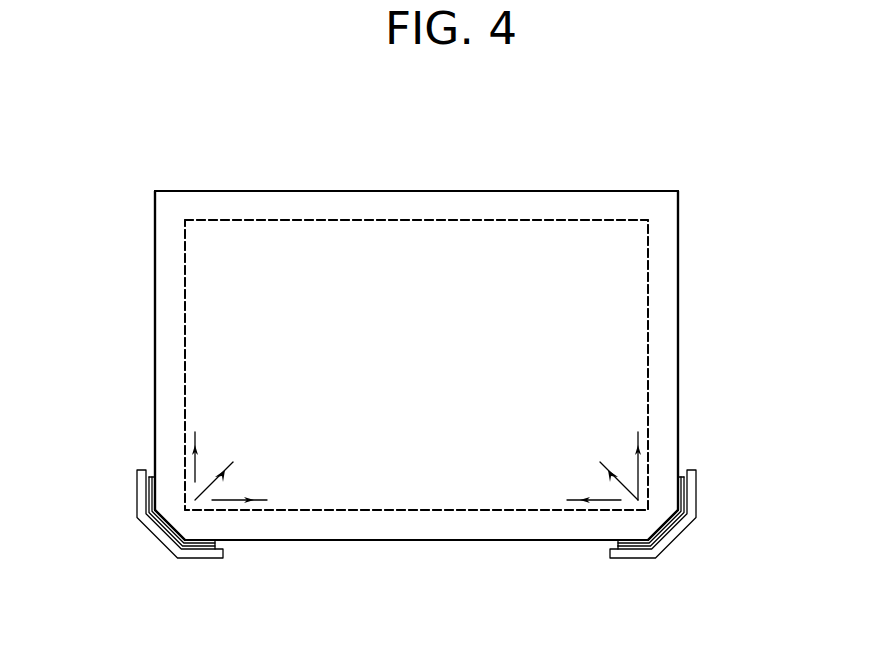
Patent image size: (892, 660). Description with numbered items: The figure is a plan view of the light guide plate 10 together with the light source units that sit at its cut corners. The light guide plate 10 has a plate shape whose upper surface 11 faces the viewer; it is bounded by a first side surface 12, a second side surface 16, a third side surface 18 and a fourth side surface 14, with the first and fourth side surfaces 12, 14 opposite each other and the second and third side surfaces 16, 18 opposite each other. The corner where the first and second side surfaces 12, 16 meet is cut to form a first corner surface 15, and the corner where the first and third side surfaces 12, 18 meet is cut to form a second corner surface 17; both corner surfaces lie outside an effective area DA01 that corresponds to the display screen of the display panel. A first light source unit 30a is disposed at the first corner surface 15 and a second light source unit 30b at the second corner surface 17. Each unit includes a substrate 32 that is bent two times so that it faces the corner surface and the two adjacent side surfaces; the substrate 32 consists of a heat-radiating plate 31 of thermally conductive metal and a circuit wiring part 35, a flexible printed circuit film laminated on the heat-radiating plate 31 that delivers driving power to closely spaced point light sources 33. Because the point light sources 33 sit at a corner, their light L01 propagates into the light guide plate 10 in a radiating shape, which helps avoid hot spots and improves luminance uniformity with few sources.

The light guide plate 10 is at (146, 243).
The upper surface 11 is at (540, 243).
The first side surface 12 is at (422, 541).
The fourth side surface 14 is at (410, 191).
The first corner surface 15 is at (168, 527).
The second side surface 16 is at (155, 360).
The second corner surface 17 is at (665, 527).
The third side surface 18 is at (678, 352).
The first light source unit 30a is at (132, 468).
The second light source unit 30b is at (729, 511).
The heat-radiating plate 31 is at (690, 528).
The substrate 32 is at (703, 514).
The point light sources 33 is at (681, 482).
The circuit wiring part 35 is at (682, 508).
The display area DA01 is at (648, 271).
The light L01 is at (197, 462).